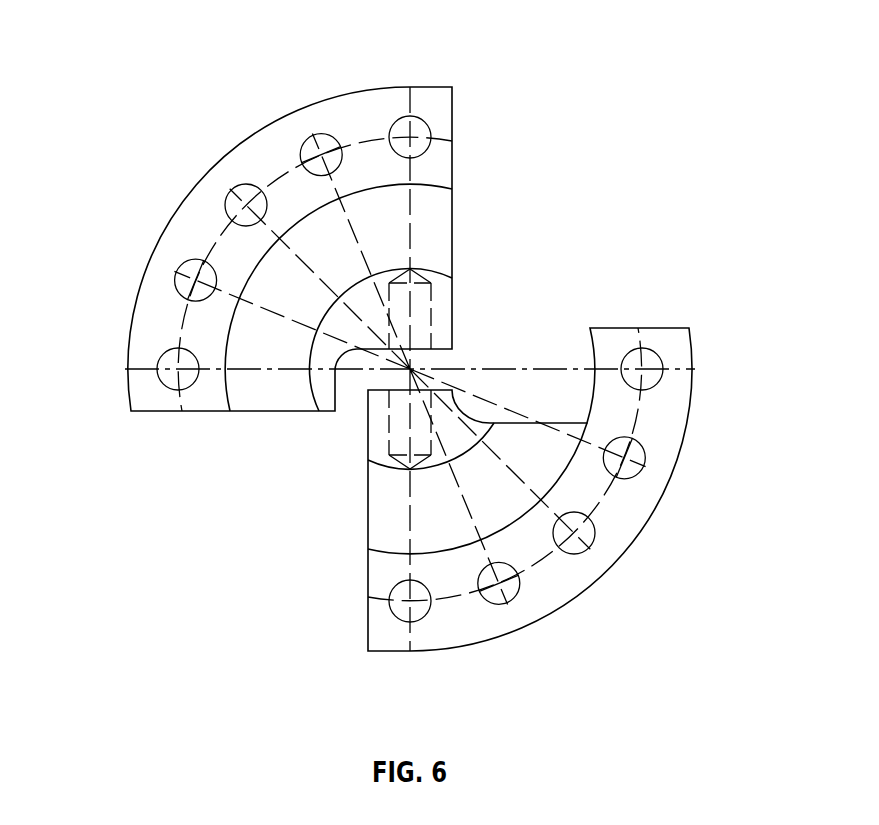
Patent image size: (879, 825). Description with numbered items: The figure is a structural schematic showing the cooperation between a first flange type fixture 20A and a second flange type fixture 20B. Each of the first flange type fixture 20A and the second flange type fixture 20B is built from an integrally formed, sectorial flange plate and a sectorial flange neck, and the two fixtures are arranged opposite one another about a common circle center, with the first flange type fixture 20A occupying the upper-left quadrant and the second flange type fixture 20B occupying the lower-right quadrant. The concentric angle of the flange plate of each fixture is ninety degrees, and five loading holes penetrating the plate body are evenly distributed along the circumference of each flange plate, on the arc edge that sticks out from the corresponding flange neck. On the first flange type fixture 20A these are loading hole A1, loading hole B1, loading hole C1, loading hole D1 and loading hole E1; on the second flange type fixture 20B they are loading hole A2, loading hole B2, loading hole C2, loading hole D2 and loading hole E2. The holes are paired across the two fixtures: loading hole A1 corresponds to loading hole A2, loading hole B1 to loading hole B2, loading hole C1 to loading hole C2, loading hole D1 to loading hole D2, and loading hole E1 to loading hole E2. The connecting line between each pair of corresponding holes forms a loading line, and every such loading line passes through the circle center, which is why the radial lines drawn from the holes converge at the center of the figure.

The first flange type fixture 20A is at (470, 174).
The second flange type fixture 20B is at (631, 314).
The loading hole A1 is at (399, 116).
The loading hole B1 is at (313, 142).
The loading hole C1 is at (232, 192).
The loading hole D1 is at (182, 268).
The loading hole E1 is at (170, 356).
The loading hole A2 is at (418, 620).
The loading hole B2 is at (505, 603).
The loading hole C2 is at (585, 545).
The loading hole D2 is at (640, 470).
The loading hole E2 is at (658, 378).